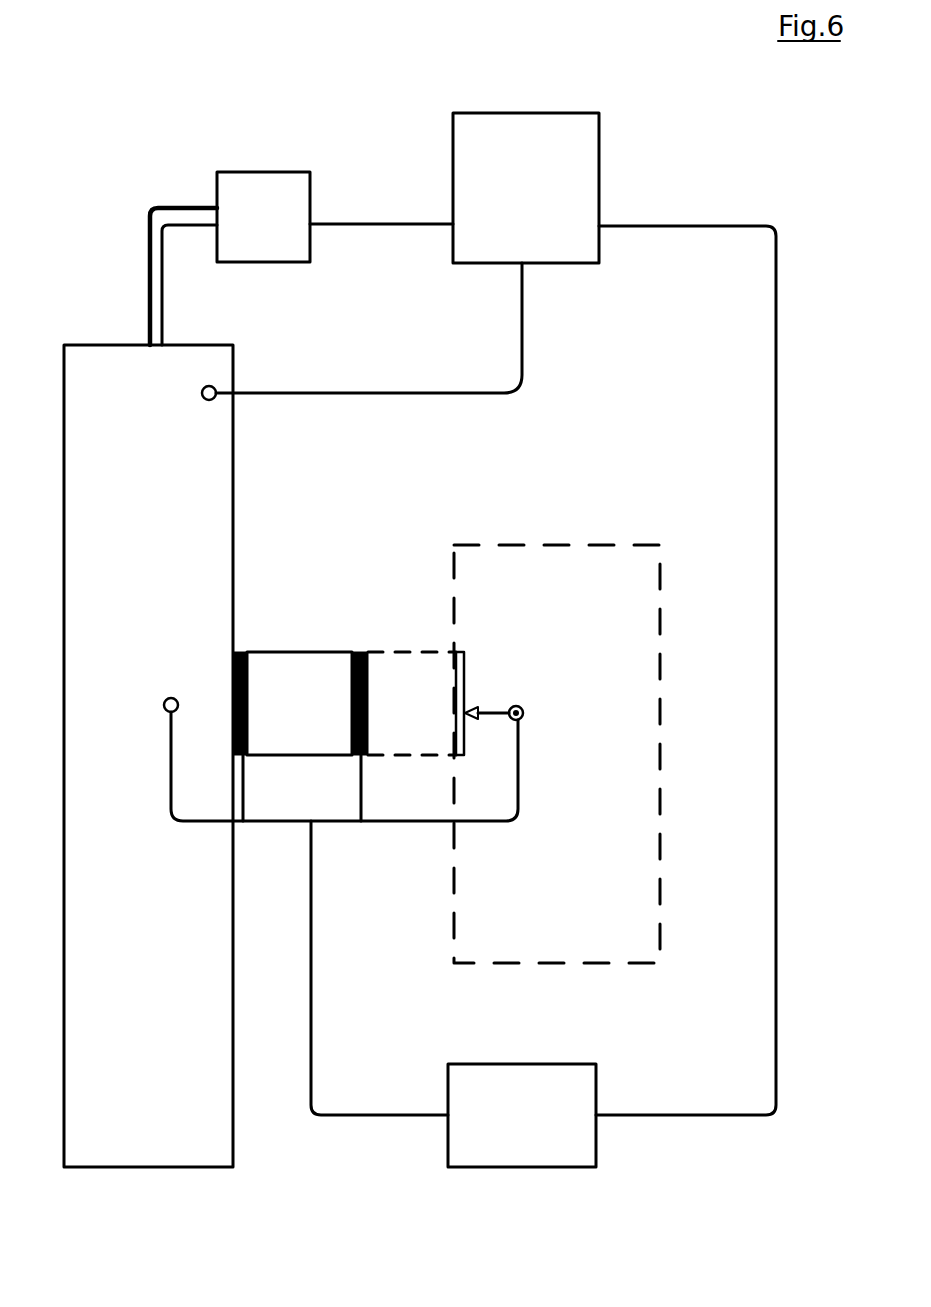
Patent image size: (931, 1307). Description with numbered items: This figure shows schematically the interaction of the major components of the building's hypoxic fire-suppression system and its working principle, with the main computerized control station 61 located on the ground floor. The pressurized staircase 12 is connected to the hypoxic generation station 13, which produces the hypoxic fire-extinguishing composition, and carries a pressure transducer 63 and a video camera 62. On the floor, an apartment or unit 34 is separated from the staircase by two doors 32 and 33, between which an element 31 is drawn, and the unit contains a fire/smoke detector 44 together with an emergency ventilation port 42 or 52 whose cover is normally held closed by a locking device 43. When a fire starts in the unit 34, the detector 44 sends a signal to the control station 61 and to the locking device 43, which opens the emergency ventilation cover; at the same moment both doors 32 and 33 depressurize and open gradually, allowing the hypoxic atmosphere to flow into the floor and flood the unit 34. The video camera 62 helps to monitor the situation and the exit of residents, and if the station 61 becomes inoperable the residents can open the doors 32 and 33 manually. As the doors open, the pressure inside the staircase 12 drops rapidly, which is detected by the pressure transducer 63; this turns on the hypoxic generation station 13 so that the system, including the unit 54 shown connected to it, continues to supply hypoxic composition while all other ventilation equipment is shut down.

The staircase 12 is at (148, 756).
The hypoxic generation station 13 is at (263, 217).
The piezoelectric element 31 is at (299, 703).
The door 32 is at (245, 648).
The door 33 is at (362, 648).
The unit 34 is at (557, 754).
The emergency ventilation port 42 is at (462, 655).
The emergency ventilation port 52 is at (515, 668).
The locking device 43 is at (472, 722).
The fire/smoke detector 44 is at (524, 710).
The evaluation unit 54 is at (526, 188).
The computerized control station 61 is at (522, 1115).
The video camera 62 is at (165, 709).
The pressure transducer 63 is at (202, 396).